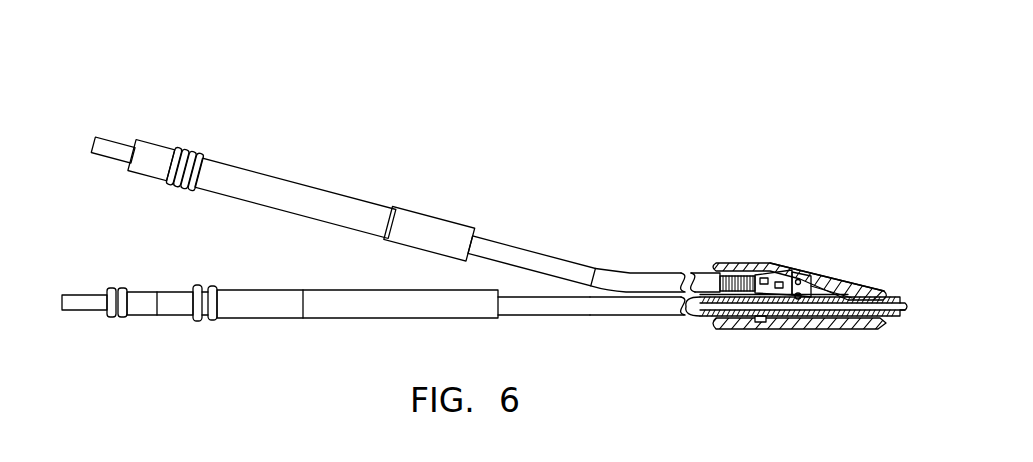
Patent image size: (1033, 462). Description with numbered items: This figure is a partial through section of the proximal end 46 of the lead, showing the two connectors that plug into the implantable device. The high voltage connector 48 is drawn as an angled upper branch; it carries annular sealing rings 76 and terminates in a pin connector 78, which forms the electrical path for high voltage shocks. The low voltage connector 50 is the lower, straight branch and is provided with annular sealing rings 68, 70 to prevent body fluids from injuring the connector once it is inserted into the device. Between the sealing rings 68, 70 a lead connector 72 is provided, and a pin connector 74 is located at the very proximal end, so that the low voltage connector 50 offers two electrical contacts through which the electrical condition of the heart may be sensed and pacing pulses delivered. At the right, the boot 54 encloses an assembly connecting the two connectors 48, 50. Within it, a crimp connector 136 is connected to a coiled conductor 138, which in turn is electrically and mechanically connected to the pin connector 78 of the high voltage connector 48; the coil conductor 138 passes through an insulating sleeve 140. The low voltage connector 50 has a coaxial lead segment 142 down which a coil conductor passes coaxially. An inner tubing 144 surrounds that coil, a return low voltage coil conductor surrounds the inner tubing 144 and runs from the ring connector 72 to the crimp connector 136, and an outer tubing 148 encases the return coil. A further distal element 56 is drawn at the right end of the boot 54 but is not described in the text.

The proximal end 46 is at (487, 183).
The high voltage connector 48 is at (273, 177).
The low voltage connector 50 is at (279, 290).
The boot 54 is at (807, 270).
The flexible distal shaft 56 is at (895, 295).
The annular sealing ring 68 is at (195, 285).
The annular sealing ring 70 is at (110, 287).
The lead connector 72 is at (167, 316).
The pin connector 74 is at (85, 311).
The annular sealing rings 76 is at (188, 145).
The pin connector 78 is at (113, 157).
The crimp connector 136 is at (773, 278).
The coiled conductor 138 is at (733, 275).
The insulating sleeve 140 is at (702, 270).
The coaxial lead segment 142 is at (515, 317).
The inner tubing 144 is at (765, 320).
The outer tubing 148 is at (608, 315).